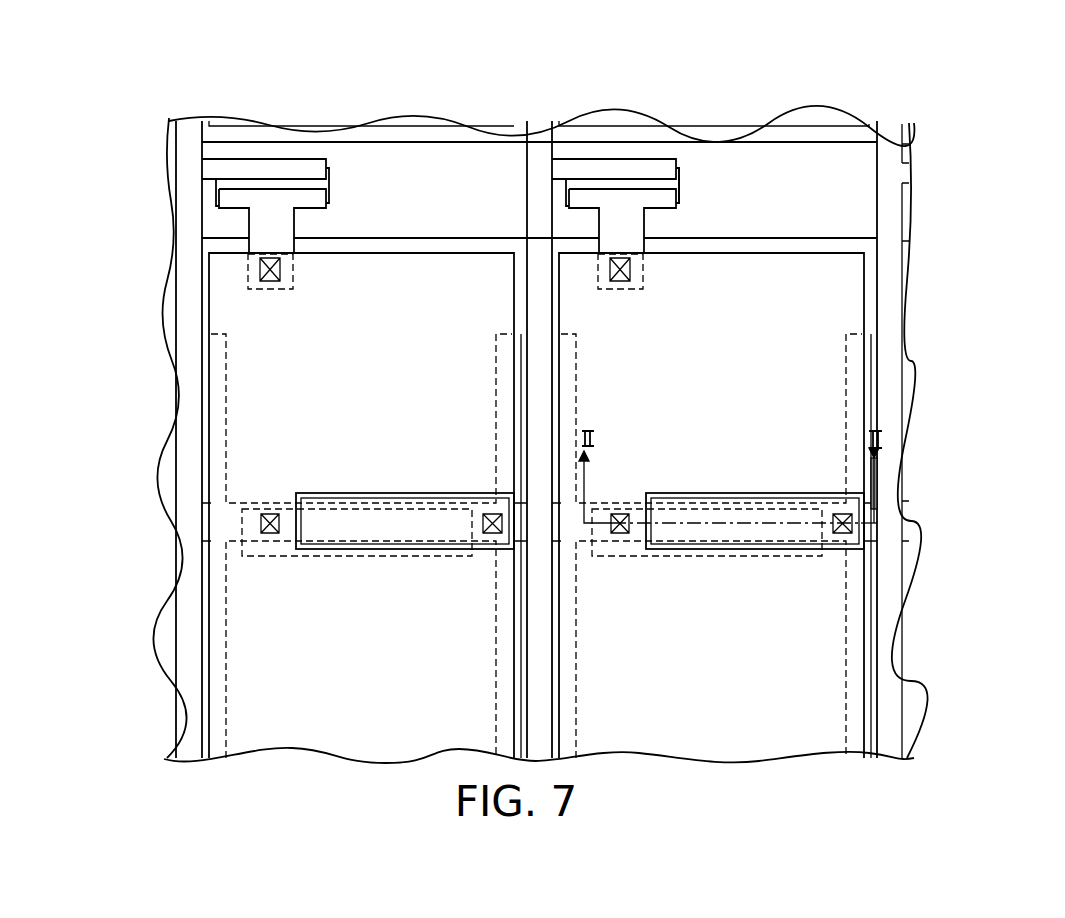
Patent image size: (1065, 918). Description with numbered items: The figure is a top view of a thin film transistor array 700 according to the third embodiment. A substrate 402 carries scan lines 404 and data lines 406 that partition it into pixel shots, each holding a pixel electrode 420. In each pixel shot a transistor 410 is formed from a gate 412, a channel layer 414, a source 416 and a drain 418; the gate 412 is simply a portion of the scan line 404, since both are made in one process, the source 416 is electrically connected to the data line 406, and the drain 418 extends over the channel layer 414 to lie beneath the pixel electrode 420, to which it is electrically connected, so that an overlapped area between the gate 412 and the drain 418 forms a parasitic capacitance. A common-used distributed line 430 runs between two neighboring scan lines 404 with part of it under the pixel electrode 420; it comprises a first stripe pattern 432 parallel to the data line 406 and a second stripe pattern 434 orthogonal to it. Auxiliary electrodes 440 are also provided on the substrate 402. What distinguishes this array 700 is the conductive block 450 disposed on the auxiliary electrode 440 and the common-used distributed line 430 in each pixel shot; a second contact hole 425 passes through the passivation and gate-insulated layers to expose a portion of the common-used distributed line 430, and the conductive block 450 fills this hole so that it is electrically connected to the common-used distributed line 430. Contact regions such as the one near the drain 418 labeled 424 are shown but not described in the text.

The substrate 402 is at (295, 748).
The scan line 404 is at (835, 165).
The data line 406 is at (892, 283).
The transistor 410 is at (747, 42).
The gate 412 is at (686, 184).
The channel layer 414 is at (648, 180).
The source 416 is at (572, 167).
The drain 418 is at (657, 197).
The pixel electrode 420 is at (828, 655).
The contact window 424 is at (633, 270).
The second contact hole 425 is at (853, 523).
The common-used distributed line 430 is at (980, 415).
The first stripe pattern 432 is at (857, 393).
The second stripe pattern 434 is at (833, 507).
The auxiliary electrode 440 is at (797, 555).
The conductive block 450 is at (867, 540).
The thin film transistor array 700 is at (940, 801).